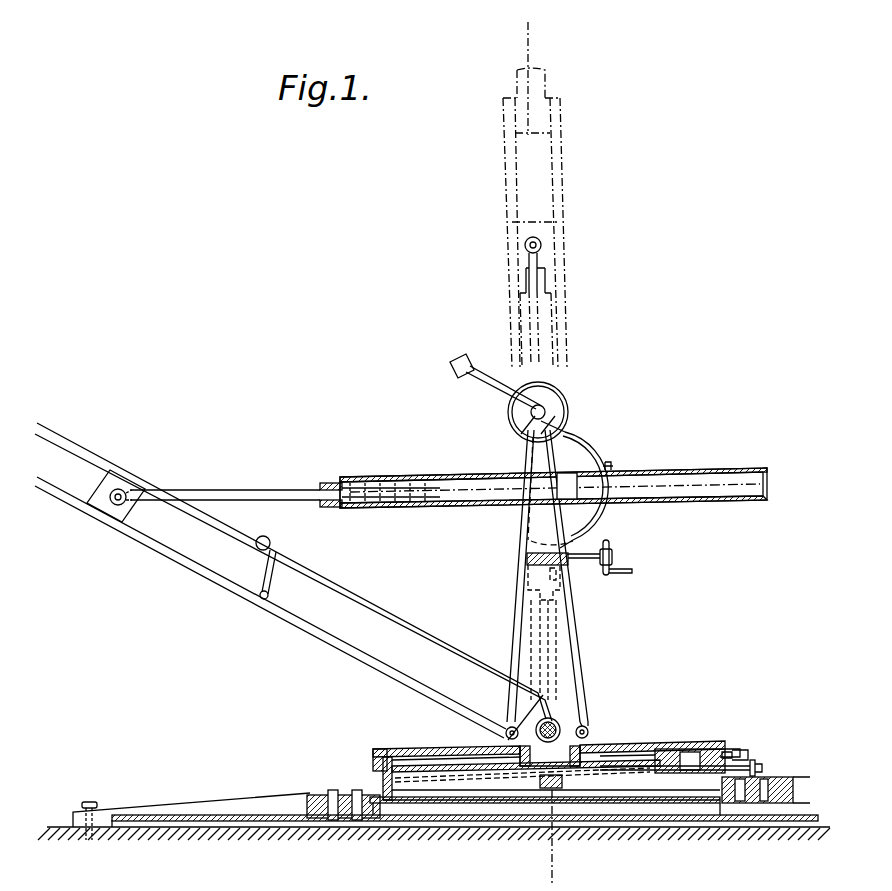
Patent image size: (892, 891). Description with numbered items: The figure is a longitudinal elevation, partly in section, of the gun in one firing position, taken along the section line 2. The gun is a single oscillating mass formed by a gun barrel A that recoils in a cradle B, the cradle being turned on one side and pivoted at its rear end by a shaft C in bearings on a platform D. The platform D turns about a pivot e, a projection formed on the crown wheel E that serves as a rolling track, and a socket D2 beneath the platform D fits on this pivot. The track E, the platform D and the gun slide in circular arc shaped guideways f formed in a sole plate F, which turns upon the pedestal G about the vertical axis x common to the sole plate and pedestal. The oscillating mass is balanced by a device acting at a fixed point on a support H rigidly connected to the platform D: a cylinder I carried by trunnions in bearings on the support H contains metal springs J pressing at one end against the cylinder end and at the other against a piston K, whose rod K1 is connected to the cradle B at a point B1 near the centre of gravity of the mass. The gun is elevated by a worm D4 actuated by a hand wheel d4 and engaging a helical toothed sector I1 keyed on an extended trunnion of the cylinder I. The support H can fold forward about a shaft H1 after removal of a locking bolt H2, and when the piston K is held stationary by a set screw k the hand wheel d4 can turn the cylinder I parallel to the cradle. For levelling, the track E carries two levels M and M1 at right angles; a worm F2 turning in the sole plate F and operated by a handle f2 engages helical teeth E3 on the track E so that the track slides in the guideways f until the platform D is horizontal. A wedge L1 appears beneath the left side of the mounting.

The section line 2- 2 is at (550, 452).
The gun barrel A is at (60, 450).
The cradle B is at (270, 562).
The coupling point of cradle B1 is at (125, 492).
The piston rod K1 is at (282, 492).
The metal springs J is at (388, 476).
The cylinder I is at (707, 470).
The helical toothed sector I1 is at (578, 433).
The piston K is at (572, 488).
The set screw k is at (610, 459).
The hand wheel d4 is at (612, 557).
The worm D4 is at (530, 558).
The support H is at (567, 630).
The shaft H1 is at (505, 732).
The locking bolt H2 is at (590, 728).
The shaft C is at (536, 718).
The pivot e is at (563, 748).
The vertical axis x is at (549, 762).
The platform D is at (643, 741).
The socket D2 is at (517, 773).
The level M1 is at (728, 752).
The level M is at (740, 752).
The circular arc shaped guideways f is at (430, 772).
The handle f2 is at (765, 763).
The sole plate F is at (385, 776).
The worm F2 is at (538, 787).
The crown wheel E is at (617, 765).
The helical teeth E3 is at (597, 785).
The pedestal G is at (700, 805).
The wedge L1 is at (255, 805).